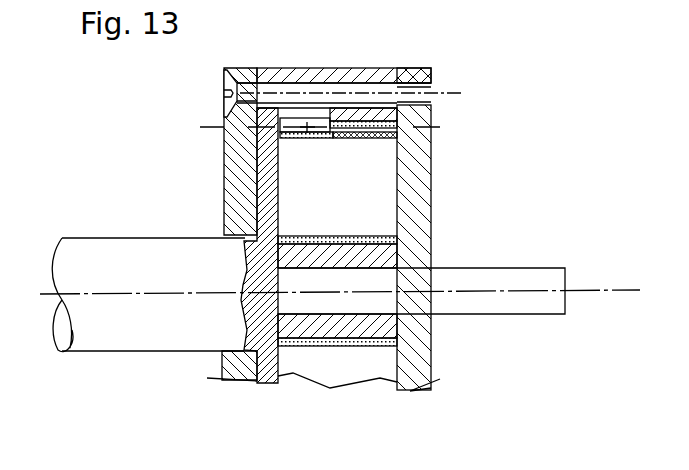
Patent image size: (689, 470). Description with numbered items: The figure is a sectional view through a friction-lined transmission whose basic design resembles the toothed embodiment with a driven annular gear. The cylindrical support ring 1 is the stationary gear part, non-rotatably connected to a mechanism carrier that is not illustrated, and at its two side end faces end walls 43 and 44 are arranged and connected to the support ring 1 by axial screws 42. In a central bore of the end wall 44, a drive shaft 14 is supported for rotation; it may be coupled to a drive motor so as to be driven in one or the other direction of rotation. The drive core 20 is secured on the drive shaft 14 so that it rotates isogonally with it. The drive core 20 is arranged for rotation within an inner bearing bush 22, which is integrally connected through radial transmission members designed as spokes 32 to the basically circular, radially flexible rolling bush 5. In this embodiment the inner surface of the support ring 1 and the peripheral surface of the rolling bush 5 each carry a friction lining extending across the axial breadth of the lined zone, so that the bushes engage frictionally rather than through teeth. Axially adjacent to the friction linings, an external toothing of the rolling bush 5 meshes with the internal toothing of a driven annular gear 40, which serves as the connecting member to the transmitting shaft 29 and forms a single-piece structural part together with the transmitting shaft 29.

The support ring 1 is at (317, 65).
The axial screws 42 is at (248, 87).
The end wall 43 is at (232, 168).
The end wall 44 is at (425, 188).
The spokes 32 is at (307, 200).
The rolling bush 5 is at (392, 133).
The inner bearing bush 22 is at (395, 235).
The drive core 20 is at (385, 333).
The drive shaft 14 is at (545, 272).
The transmitting shaft 29 is at (118, 252).
The driven annular gear 40 is at (215, 343).